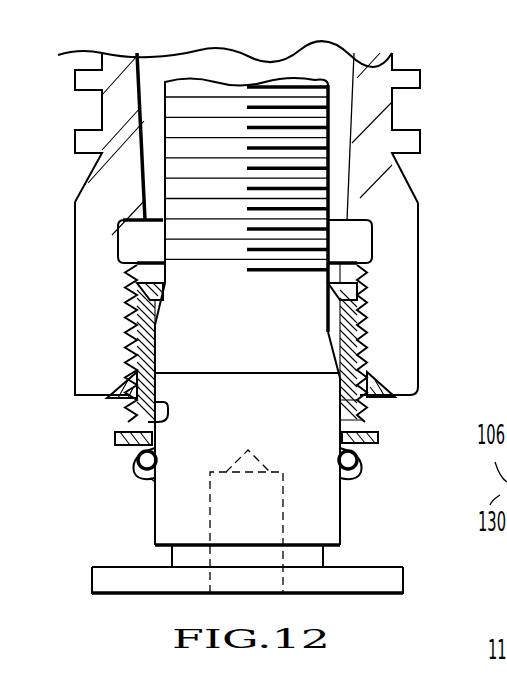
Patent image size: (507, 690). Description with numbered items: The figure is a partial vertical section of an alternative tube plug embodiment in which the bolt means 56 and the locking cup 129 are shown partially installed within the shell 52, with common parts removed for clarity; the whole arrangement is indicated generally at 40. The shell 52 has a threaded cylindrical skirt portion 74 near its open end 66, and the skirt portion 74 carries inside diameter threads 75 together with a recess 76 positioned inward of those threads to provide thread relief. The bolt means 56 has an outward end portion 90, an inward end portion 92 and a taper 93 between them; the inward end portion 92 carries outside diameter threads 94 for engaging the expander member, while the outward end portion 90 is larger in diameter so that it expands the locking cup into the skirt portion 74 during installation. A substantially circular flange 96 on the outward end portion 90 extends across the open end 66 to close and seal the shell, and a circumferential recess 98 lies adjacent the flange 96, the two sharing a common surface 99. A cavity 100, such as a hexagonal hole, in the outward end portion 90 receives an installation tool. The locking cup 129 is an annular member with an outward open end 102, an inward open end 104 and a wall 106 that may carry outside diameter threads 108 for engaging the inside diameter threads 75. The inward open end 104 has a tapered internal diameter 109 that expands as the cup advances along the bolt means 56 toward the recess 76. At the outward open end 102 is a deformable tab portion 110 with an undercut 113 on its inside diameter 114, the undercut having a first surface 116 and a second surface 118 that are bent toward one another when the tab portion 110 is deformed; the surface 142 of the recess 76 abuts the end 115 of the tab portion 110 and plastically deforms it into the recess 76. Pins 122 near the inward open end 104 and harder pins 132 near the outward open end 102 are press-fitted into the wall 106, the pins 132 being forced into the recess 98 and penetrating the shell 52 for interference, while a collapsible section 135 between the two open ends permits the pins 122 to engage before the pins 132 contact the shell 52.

The fitting assembly 40 is at (454, 104).
The shell 52 is at (68, 54).
The bolt means 56 is at (190, 77).
The open end 66 is at (102, 367).
The skirt portion 74 is at (405, 258).
The inside diameter threads 75 is at (370, 371).
The recess 76 is at (372, 248).
The outward end portion 90 is at (315, 513).
The inward end portion 92 is at (330, 120).
The taper 93 is at (328, 336).
The outside diameter threads 94 is at (355, 117).
The flange 96 is at (405, 571).
The recess 98 is at (325, 556).
The surface 99 is at (340, 567).
The cavity 100 is at (250, 446).
The outward open end 102 is at (143, 478).
The inward open end 104 is at (127, 287).
The wall 106 is at (377, 347).
The outside diameter threads 108 is at (378, 436).
The tapered internal diameter 109 is at (167, 288).
The deformable tab portion 110 is at (135, 462).
The undercut 113 is at (157, 460).
The inside diameter 114 is at (130, 405).
The end 115 is at (150, 480).
The first surface 116 is at (340, 465).
The second surface 118 is at (340, 457).
The pins 122 is at (130, 297).
The locking cup 129 is at (370, 410).
The pins 132 is at (115, 440).
The collapsible section 135 is at (363, 347).
The surface 142 is at (345, 218).